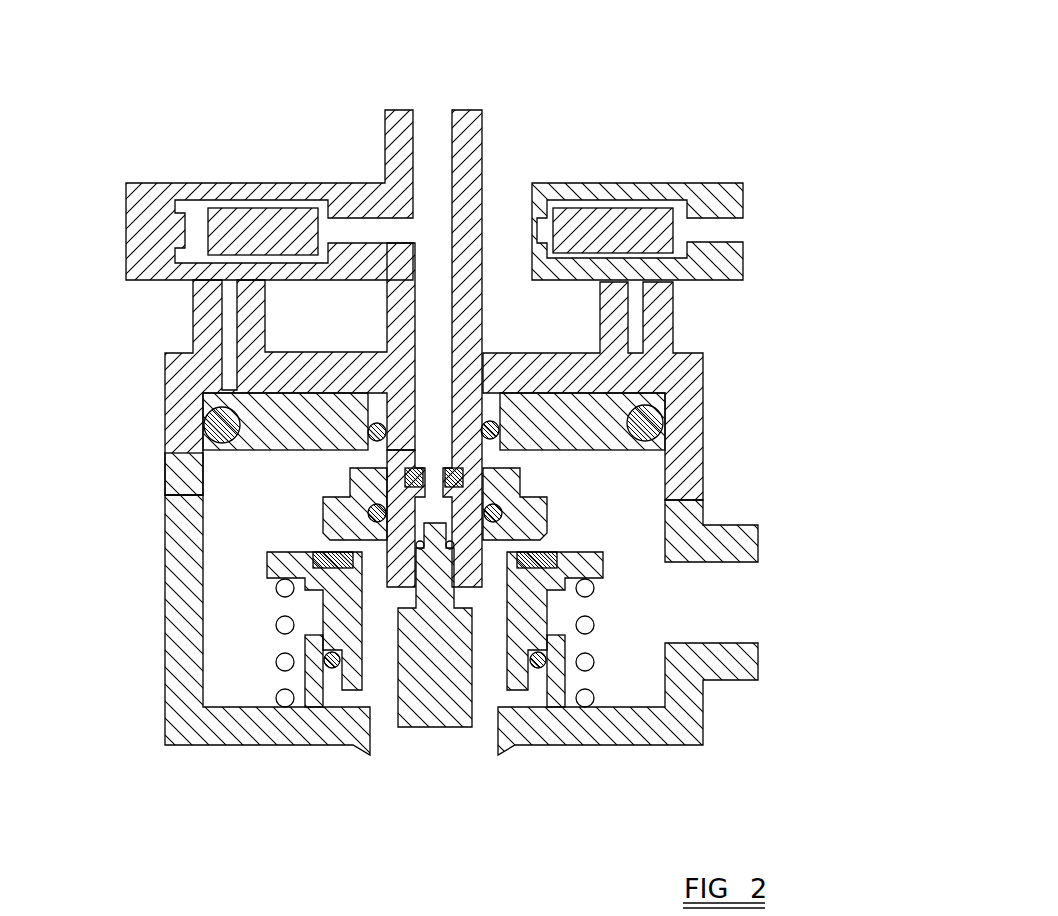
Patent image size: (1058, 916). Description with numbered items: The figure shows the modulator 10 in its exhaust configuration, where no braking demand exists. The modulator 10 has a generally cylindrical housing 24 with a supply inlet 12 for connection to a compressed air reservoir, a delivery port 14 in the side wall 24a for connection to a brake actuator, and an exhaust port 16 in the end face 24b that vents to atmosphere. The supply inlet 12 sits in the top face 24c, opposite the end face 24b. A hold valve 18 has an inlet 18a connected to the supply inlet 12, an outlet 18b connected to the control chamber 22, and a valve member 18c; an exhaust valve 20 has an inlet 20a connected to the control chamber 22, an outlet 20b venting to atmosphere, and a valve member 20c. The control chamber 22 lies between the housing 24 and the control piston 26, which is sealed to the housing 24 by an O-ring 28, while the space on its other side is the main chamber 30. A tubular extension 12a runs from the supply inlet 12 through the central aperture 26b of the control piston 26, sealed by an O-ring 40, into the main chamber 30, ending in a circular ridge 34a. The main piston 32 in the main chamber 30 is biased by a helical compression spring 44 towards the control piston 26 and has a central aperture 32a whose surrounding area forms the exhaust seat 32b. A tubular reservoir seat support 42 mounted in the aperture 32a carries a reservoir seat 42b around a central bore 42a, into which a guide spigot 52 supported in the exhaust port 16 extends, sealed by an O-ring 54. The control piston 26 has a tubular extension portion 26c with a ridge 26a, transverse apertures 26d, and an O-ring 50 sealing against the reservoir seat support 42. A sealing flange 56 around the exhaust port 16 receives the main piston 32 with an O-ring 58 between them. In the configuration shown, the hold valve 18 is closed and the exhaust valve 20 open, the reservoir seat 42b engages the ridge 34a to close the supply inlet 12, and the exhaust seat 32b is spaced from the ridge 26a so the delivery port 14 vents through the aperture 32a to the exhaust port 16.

The hold valve 18 is at (185, 172).
The inlet 18a is at (340, 228).
The outlet 18b is at (231, 268).
The valve member 18c is at (265, 228).
The exhaust valve 20 is at (643, 172).
The inlet 20a is at (690, 328).
The outlet 20b is at (718, 222).
The valve member 20c is at (572, 235).
The supply inlet 12 is at (447, 135).
The tubular extension 12a is at (438, 466).
The delivery port 14 is at (485, 580).
The exhaust port 16 is at (488, 758).
The control chamber 22 is at (695, 375).
The housing 24 is at (155, 382).
The side wall 24a is at (195, 483).
The end face 24b is at (267, 746).
The top face 24c is at (297, 352).
The control piston 26 is at (702, 480).
The ridge 26a is at (557, 560).
The central aperture 26b is at (487, 420).
The tubular extension portion 26c is at (335, 575).
The transverse apertures 26d is at (350, 470).
The O-ring 28 is at (680, 452).
The main chamber 30 is at (250, 560).
The main piston 32 is at (315, 630).
The central aperture 32a is at (595, 662).
The exhaust seat 32b is at (318, 556).
The ridge 34a is at (405, 470).
The O-ring 40 is at (702, 510).
The reservoir seat support 42 is at (368, 513).
The central bore 42a is at (662, 421).
The reservoir seat 42b is at (502, 513).
The helical compression spring 44 is at (700, 676).
The O-ring 50 is at (470, 548).
The guide spigot 52 is at (398, 730).
The O-ring 54 is at (400, 680).
The sealing flange 56 is at (558, 700).
The O-ring 58 is at (537, 670).
The modulator 10 is at (150, 728).